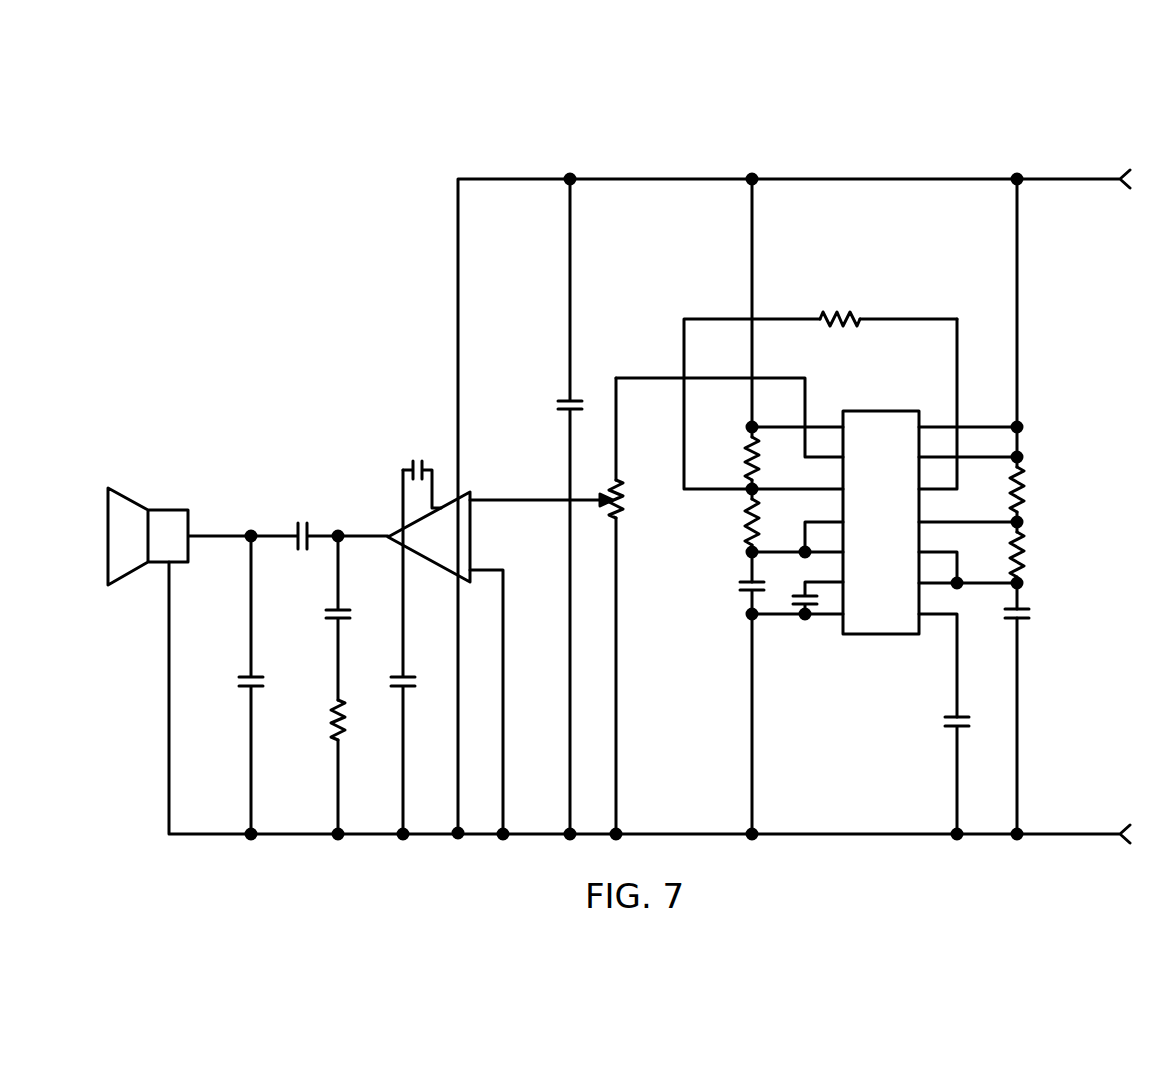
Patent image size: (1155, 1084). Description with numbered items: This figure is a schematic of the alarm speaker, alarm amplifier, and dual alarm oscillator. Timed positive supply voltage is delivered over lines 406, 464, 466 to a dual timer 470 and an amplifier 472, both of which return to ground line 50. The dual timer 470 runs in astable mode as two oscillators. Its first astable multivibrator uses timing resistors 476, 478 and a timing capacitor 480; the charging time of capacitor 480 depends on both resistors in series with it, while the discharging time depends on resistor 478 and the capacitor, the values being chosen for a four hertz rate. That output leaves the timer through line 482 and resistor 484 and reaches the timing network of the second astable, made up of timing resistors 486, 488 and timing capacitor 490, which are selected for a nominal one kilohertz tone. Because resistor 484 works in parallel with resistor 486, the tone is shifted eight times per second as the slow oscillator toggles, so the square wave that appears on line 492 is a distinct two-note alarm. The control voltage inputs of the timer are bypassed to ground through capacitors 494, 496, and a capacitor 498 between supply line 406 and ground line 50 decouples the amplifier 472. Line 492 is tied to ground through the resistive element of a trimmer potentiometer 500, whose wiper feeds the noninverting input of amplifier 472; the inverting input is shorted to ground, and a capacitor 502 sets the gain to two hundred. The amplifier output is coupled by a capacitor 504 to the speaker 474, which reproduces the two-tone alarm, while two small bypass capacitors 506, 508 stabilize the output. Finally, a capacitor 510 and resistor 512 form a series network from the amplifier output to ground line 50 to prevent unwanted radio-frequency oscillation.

The +V line 406 is at (457, 246).
The ground line 50 is at (1084, 832).
The speaker 474 is at (122, 495).
The bypass capacitor 506 is at (248, 675).
The capacitor 504 is at (296, 528).
The capacitor 510 is at (334, 606).
The resistor 512 is at (332, 720).
The bypass capacitor 508 is at (400, 675).
The capacitor 502 is at (412, 462).
The amplifier 472 is at (473, 536).
The capacitor 498 is at (562, 400).
The trimmer potentiometer 500 is at (630, 504).
The line 492 is at (656, 377).
The line 466 is at (750, 246).
The resistor 484 is at (845, 314).
The line 482 is at (954, 392).
The timing resistor 486 is at (762, 456).
The timing resistor 488 is at (762, 518).
The timing capacitor 490 is at (748, 594).
The capacitor 494 is at (798, 598).
The dual timer 470 is at (895, 636).
The line 464 is at (1014, 246).
The timing resistor 476 is at (1024, 484).
The timing resistor 478 is at (1024, 548).
The timing capacitor 480 is at (1024, 620).
The capacitor 496 is at (951, 729).